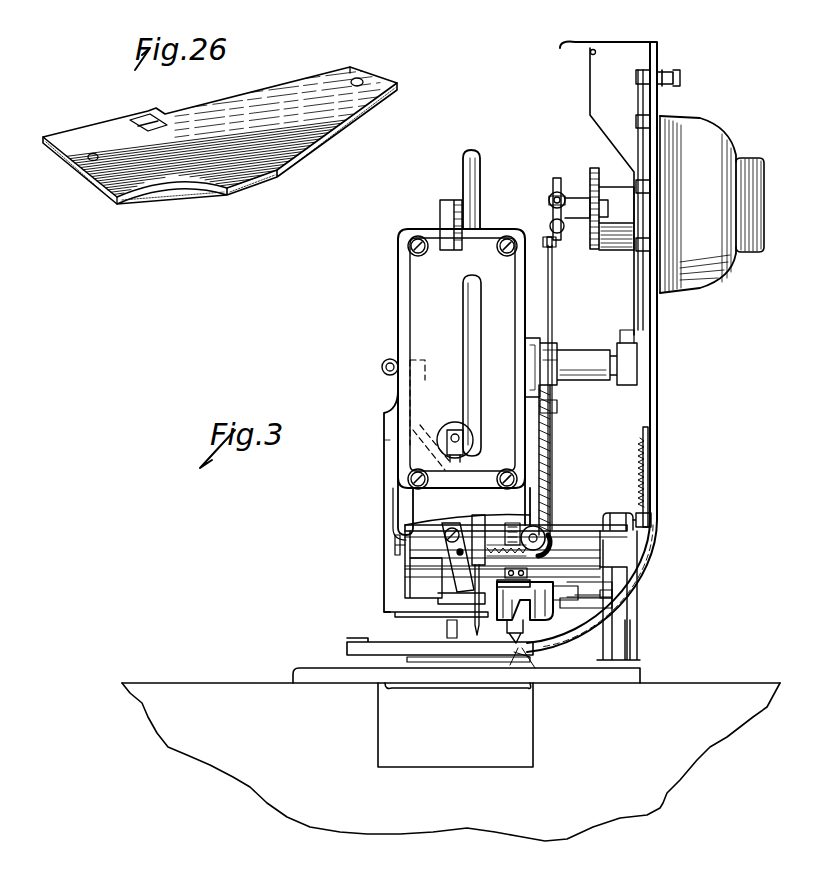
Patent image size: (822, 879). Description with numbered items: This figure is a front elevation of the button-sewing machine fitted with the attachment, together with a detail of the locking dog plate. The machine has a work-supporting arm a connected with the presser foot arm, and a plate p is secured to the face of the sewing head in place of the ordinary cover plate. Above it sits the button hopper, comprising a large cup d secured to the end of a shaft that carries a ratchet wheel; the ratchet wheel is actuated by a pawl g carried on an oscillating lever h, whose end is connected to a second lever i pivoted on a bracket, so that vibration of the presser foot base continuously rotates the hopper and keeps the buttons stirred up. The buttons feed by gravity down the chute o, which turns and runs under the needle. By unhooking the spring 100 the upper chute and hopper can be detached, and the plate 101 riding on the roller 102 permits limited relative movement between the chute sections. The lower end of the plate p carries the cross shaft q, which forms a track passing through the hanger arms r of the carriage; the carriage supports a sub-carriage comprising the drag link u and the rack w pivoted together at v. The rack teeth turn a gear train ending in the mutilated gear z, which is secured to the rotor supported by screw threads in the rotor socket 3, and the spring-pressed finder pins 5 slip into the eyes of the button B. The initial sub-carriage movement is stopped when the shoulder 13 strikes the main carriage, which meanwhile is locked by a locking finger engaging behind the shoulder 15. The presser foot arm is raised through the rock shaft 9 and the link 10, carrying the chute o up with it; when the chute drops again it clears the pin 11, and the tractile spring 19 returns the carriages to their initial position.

In FIG. 26, the shoulder 15 is at (135, 118).
In FIG. 3, the cup d is at (703, 130).
In FIG. 3, the pawl g is at (592, 168).
In FIG. 3, the oscillating lever h is at (556, 178).
In FIG. 3, the lever i is at (553, 290).
In FIG. 3, the plate p is at (398, 302).
In FIG. 3, the rock shaft 9 is at (383, 366).
In FIG. 3, the link 10 is at (412, 428).
In FIG. 3, the tractile spring 19 is at (551, 455).
In FIG. 3, the spring 100 is at (640, 480).
In FIG. 3, the plate 101 is at (650, 460).
In FIG. 3, the roller 102 is at (651, 506).
In FIG. 3, the chute o is at (657, 405).
In FIG. 3, the cross shaft q is at (398, 524).
In FIG. 3, the hanger arms r is at (488, 513).
In FIG. 3, the mutilated gear z is at (532, 578).
In FIG. 3, the pin 11 is at (447, 629).
In FIG. 3, the pivot v is at (545, 600).
In FIG. 3, the rack w is at (560, 585).
In FIG. 3, the drag link u is at (600, 585).
In FIG. 3, the rotor socket 3 is at (552, 600).
In FIG. 3, the shoulder 13 is at (625, 650).
In FIG. 3, the finder pins 5 is at (525, 657).
In FIG. 3, the work-supporting arm a is at (470, 660).
In FIG. 3, the button B is at (520, 652).